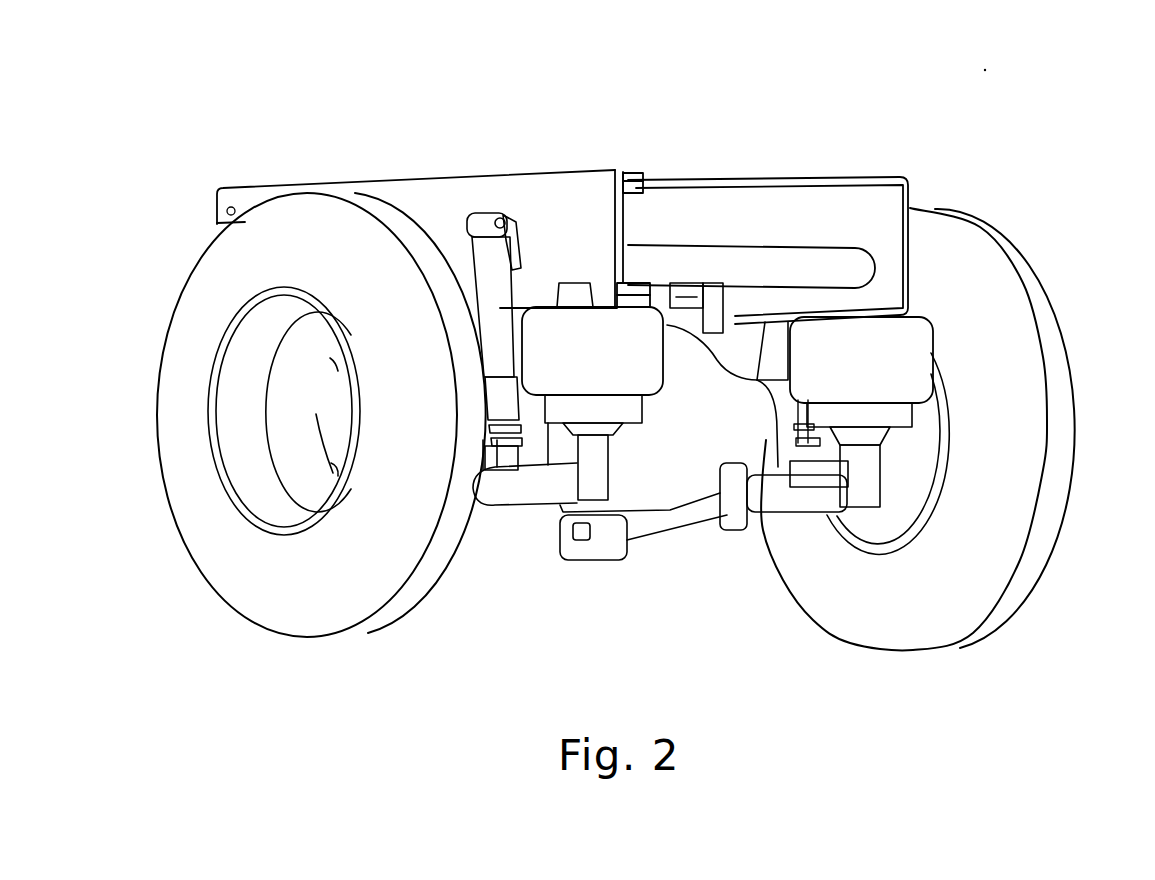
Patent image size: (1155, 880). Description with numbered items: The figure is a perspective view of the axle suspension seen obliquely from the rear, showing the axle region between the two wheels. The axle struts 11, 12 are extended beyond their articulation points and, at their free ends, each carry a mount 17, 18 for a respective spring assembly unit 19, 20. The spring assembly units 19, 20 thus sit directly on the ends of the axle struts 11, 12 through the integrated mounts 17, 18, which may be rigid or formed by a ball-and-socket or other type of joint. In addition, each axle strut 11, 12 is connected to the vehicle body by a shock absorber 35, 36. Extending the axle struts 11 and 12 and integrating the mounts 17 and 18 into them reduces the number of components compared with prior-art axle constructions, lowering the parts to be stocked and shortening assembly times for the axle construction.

The axle strut 11 is at (808, 494).
The axle strut 12 is at (517, 483).
The mount 17 is at (880, 447).
The mount 18 is at (593, 428).
The spring assembly unit 19 is at (590, 360).
The spring assembly unit 20 is at (875, 365).
The shock absorber 35 is at (802, 407).
The shock absorber 36 is at (494, 298).